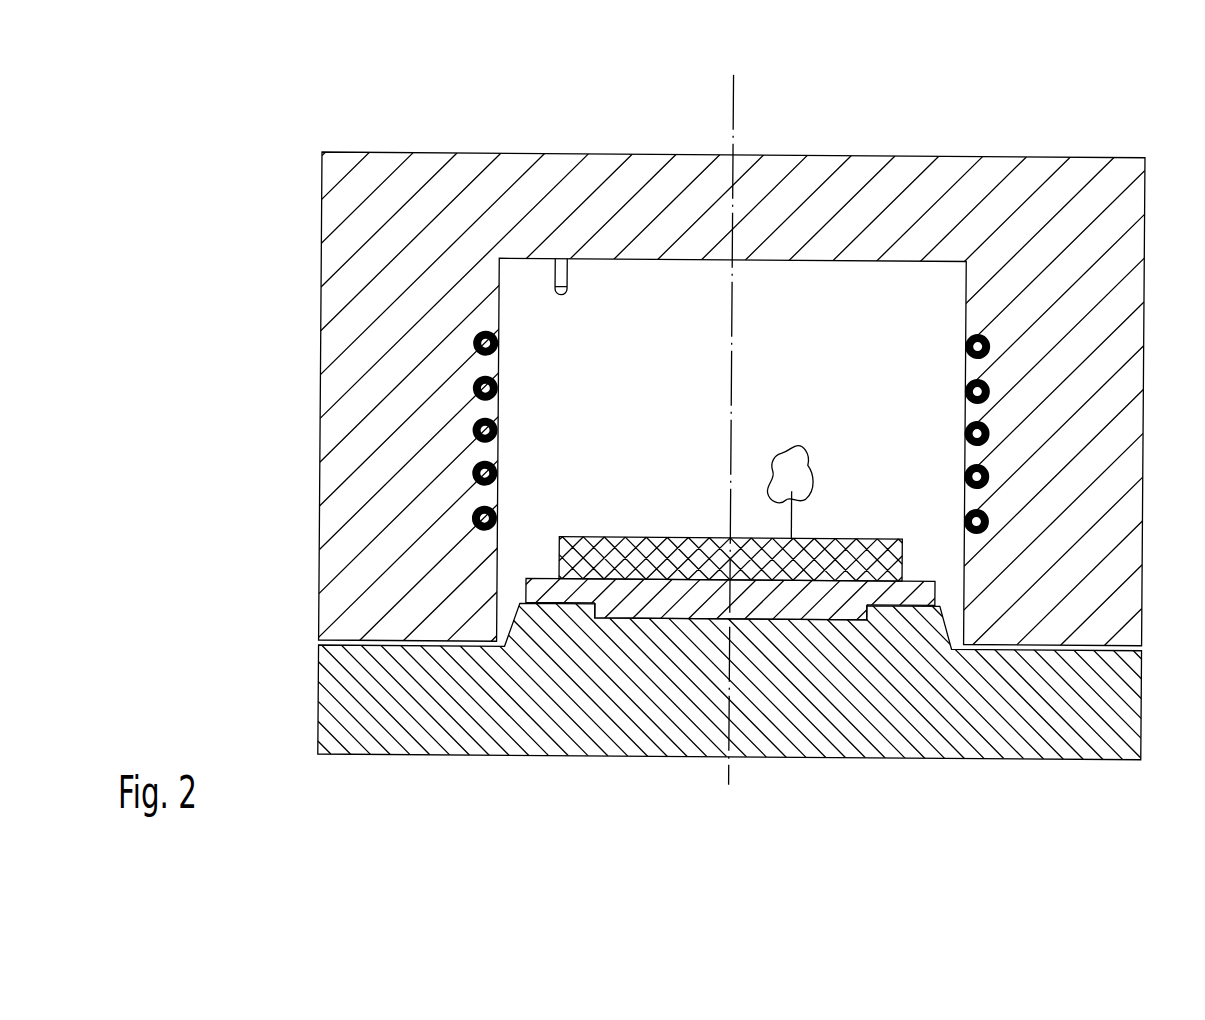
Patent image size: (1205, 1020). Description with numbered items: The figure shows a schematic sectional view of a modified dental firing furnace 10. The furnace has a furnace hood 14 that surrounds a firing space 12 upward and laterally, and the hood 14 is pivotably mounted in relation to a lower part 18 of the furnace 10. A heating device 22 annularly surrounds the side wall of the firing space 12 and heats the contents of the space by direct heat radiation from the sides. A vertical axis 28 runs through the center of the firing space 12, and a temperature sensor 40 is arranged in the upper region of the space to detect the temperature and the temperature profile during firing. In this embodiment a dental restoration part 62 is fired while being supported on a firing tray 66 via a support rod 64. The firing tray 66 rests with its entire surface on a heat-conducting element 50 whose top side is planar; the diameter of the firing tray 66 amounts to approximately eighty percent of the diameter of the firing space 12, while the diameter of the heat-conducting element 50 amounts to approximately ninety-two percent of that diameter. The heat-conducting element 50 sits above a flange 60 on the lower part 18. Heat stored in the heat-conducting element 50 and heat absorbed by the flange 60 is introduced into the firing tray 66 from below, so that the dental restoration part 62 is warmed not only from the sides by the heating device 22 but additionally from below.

The dental firing furnace 10 is at (1121, 120).
The firing space 12 is at (641, 281).
The furnace hood 14 is at (369, 267).
The lower part of the furnace 18 is at (344, 710).
The heating device 22 is at (475, 473).
The axis 28 is at (733, 100).
The temperature sensor 40 is at (566, 268).
The heat-conducting element 50 is at (765, 602).
The flange 60 is at (558, 588).
The dental restoration part 62 is at (810, 462).
The support rod 64 is at (797, 513).
The firing tray 66 is at (908, 556).